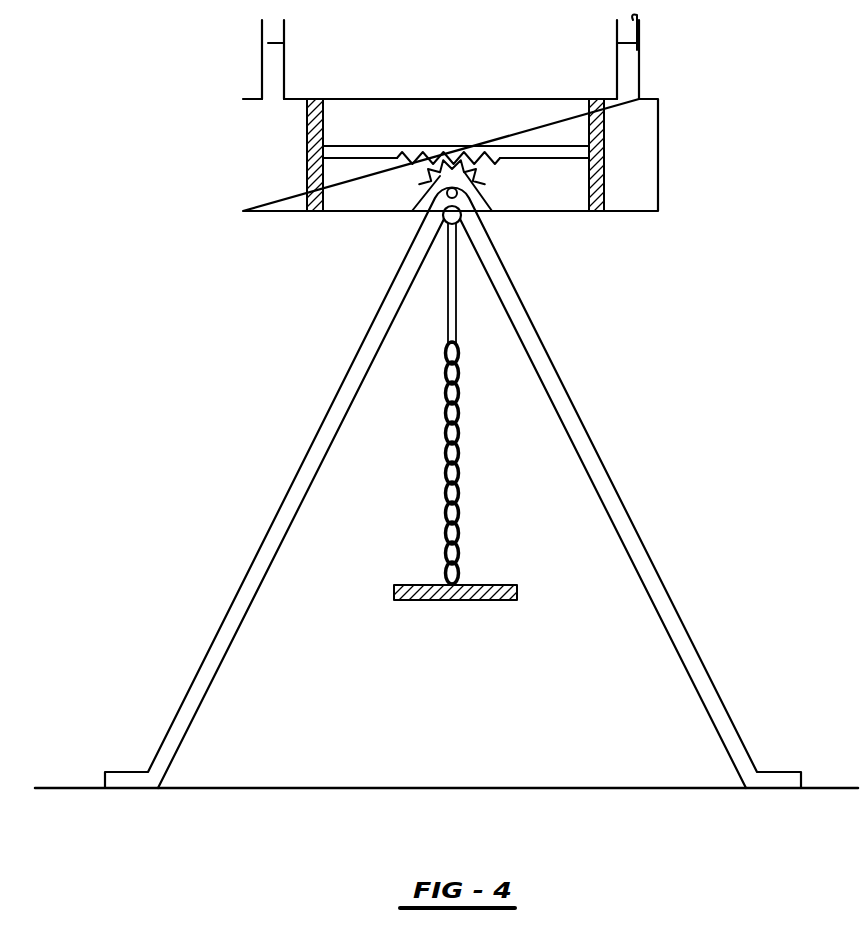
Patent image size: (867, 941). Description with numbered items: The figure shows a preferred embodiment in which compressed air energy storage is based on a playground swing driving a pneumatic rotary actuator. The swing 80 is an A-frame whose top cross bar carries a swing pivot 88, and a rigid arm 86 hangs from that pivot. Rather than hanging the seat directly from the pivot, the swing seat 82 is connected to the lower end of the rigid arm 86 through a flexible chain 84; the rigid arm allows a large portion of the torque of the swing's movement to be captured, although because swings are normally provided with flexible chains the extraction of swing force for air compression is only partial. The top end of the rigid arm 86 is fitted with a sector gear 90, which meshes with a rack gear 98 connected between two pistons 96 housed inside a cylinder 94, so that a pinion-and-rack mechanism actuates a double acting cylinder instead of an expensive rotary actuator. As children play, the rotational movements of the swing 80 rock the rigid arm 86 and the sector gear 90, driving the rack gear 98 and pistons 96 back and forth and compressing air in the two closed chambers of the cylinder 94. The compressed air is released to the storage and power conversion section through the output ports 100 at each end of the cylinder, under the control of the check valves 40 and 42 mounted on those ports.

The check valve 40 is at (282, 43).
The check valve 42 is at (640, 18).
The swing 80 is at (686, 525).
The swing seat 82 is at (430, 586).
The flexible chain 84 is at (443, 474).
The rigid arm 86 is at (446, 318).
The swing pivot 88 is at (427, 197).
The sector gear 90 is at (472, 177).
The cylinder 94 is at (637, 178).
The pistons 96 is at (318, 157).
The rack gear 98 is at (458, 152).
The output ports 100 is at (272, 72).